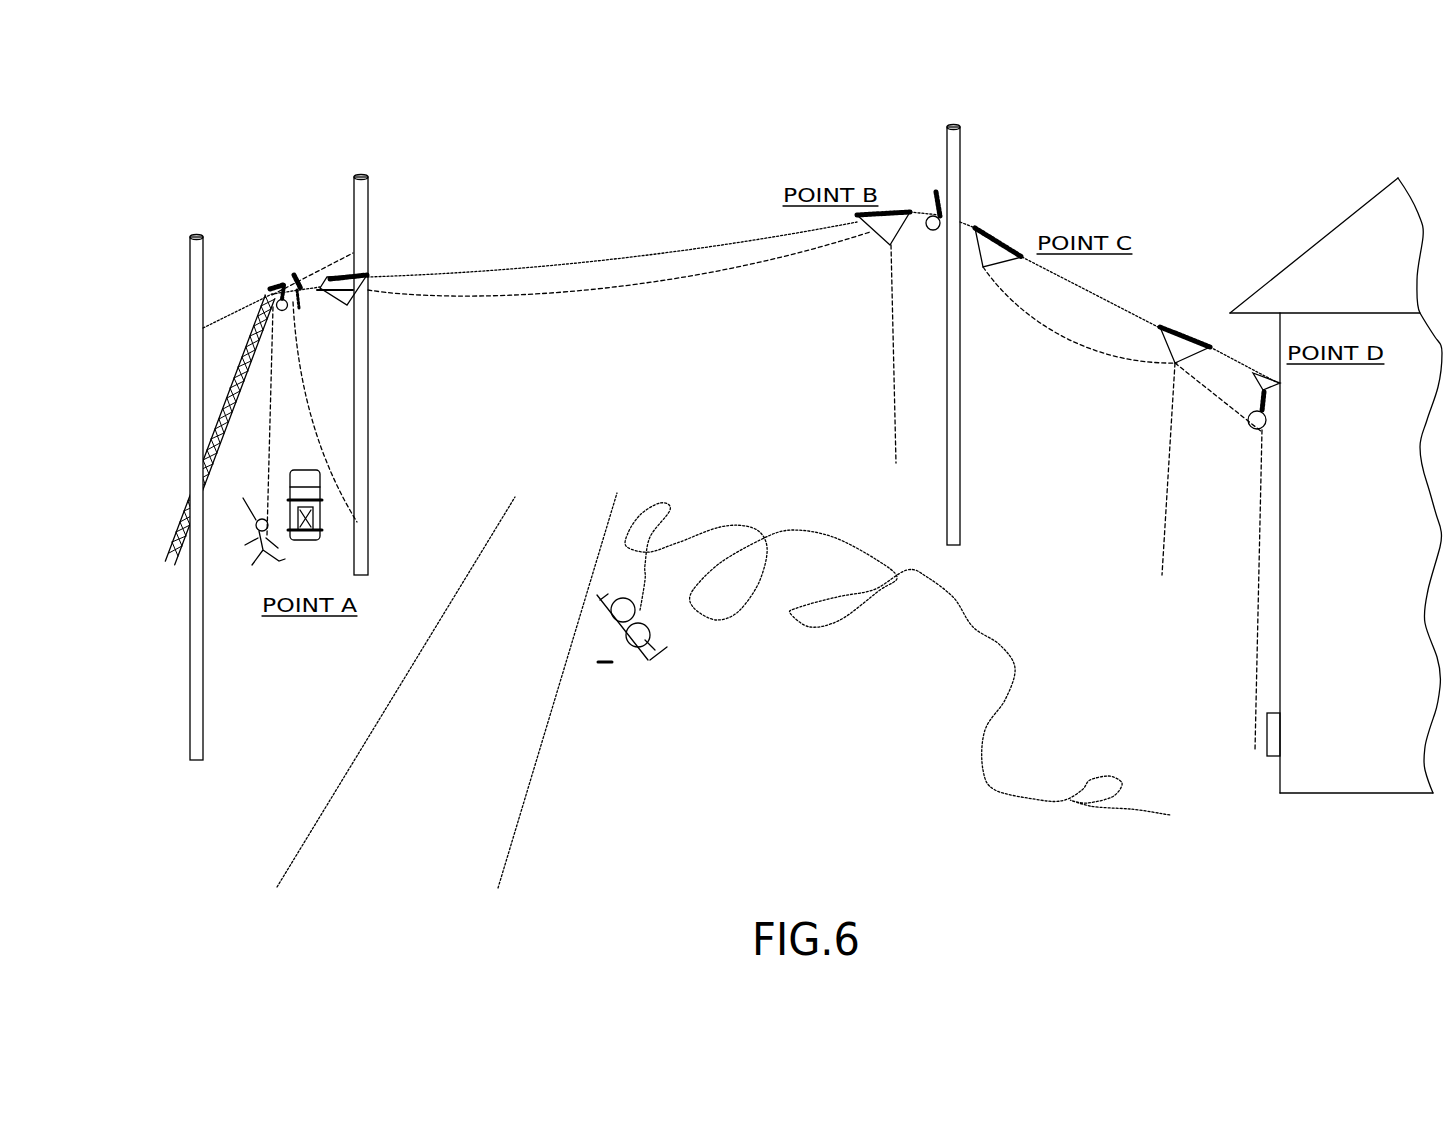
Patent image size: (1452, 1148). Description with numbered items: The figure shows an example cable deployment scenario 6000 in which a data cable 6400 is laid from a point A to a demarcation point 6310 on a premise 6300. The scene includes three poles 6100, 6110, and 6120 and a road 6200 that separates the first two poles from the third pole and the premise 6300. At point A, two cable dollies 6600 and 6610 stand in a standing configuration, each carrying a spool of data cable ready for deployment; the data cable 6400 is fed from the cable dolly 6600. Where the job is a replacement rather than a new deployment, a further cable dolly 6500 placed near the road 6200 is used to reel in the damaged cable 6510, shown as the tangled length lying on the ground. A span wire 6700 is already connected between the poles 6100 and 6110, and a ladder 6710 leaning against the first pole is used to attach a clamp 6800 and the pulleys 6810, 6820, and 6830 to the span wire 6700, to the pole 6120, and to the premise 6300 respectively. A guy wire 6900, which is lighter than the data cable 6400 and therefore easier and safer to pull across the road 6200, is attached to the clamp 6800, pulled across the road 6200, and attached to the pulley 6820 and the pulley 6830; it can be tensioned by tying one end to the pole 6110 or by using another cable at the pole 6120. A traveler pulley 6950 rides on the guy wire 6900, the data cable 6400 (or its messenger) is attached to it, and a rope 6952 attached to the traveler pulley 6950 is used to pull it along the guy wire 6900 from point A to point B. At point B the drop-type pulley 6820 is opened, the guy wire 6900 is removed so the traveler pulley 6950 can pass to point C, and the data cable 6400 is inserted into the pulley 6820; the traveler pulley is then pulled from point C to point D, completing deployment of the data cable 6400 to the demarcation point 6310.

The cable deployment scenario 6000 is at (250, 172).
The pole 6100 is at (195, 692).
The pole 6110 is at (363, 455).
The pole 6120 is at (953, 427).
The road 6200 is at (412, 870).
The premise 6300 is at (1407, 783).
The demarcation point 6310 is at (1272, 739).
The data cable 6400 is at (1260, 642).
The cable dolly 6500 is at (620, 660).
The damaged cable 6510 is at (830, 622).
The cable dolly 6600 is at (255, 596).
The cable dolly 6610 is at (345, 569).
The span wire 6700 is at (225, 312).
The ladder 6710 is at (177, 516).
The clamp 6800 is at (277, 287).
The pulley 6810 is at (297, 275).
The pulley 6820 is at (937, 190).
The pulley 6830 is at (1263, 372).
The guy wire 6900 is at (558, 262).
The traveler pulley 6950 is at (373, 272).
The rope 6952 is at (892, 323).